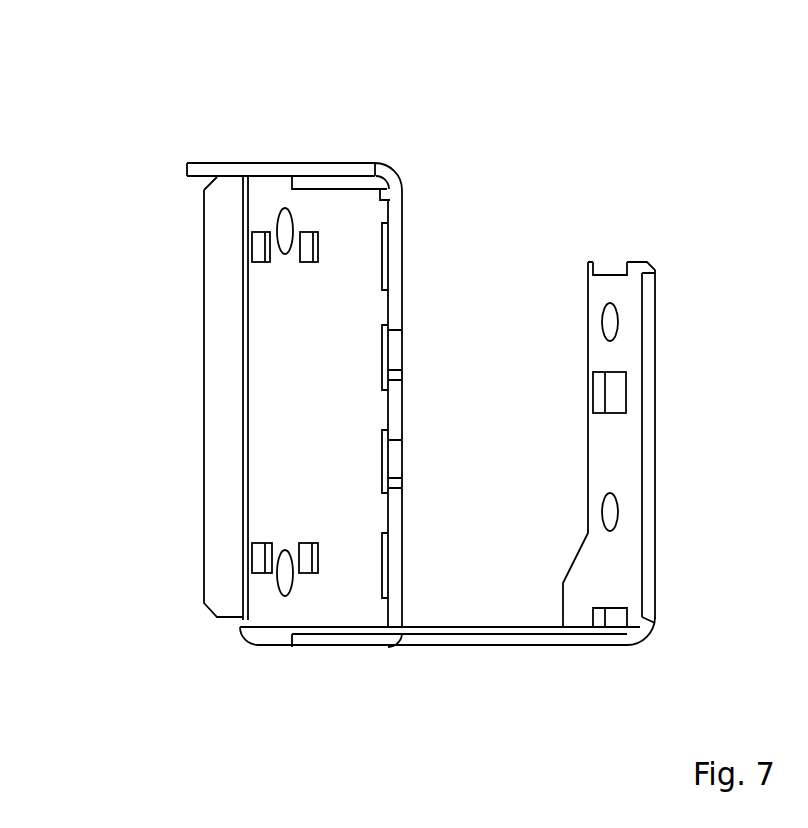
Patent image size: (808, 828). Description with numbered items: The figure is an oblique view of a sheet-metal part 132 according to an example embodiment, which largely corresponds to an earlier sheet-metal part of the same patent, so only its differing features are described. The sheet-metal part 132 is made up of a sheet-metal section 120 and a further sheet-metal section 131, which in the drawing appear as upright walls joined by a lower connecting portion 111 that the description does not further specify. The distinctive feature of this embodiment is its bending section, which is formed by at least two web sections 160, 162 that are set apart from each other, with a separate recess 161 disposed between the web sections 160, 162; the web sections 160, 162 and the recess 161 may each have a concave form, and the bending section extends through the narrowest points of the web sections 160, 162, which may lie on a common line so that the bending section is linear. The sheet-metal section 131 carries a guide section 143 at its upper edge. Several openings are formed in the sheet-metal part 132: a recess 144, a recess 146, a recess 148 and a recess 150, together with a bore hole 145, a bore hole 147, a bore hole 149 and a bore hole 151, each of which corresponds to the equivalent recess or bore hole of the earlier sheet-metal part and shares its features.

The base plate 111 is at (497, 637).
The sheet-metal section 120 is at (285, 428).
The sheet-metal section 131 is at (668, 384).
The sheet-metal part 132 is at (281, 402).
The guide section 143 is at (613, 268).
The recess 144 is at (300, 262).
The bore hole 145 is at (278, 222).
The recess 146 is at (248, 250).
The bore hole 147 is at (622, 320).
The recess 148 is at (628, 395).
The bore hole 149 is at (620, 512).
The recess 150 is at (248, 560).
The bore hole 151 is at (280, 590).
The web section 160 is at (391, 307).
The recess 161 is at (391, 253).
The web section 162 is at (390, 205).